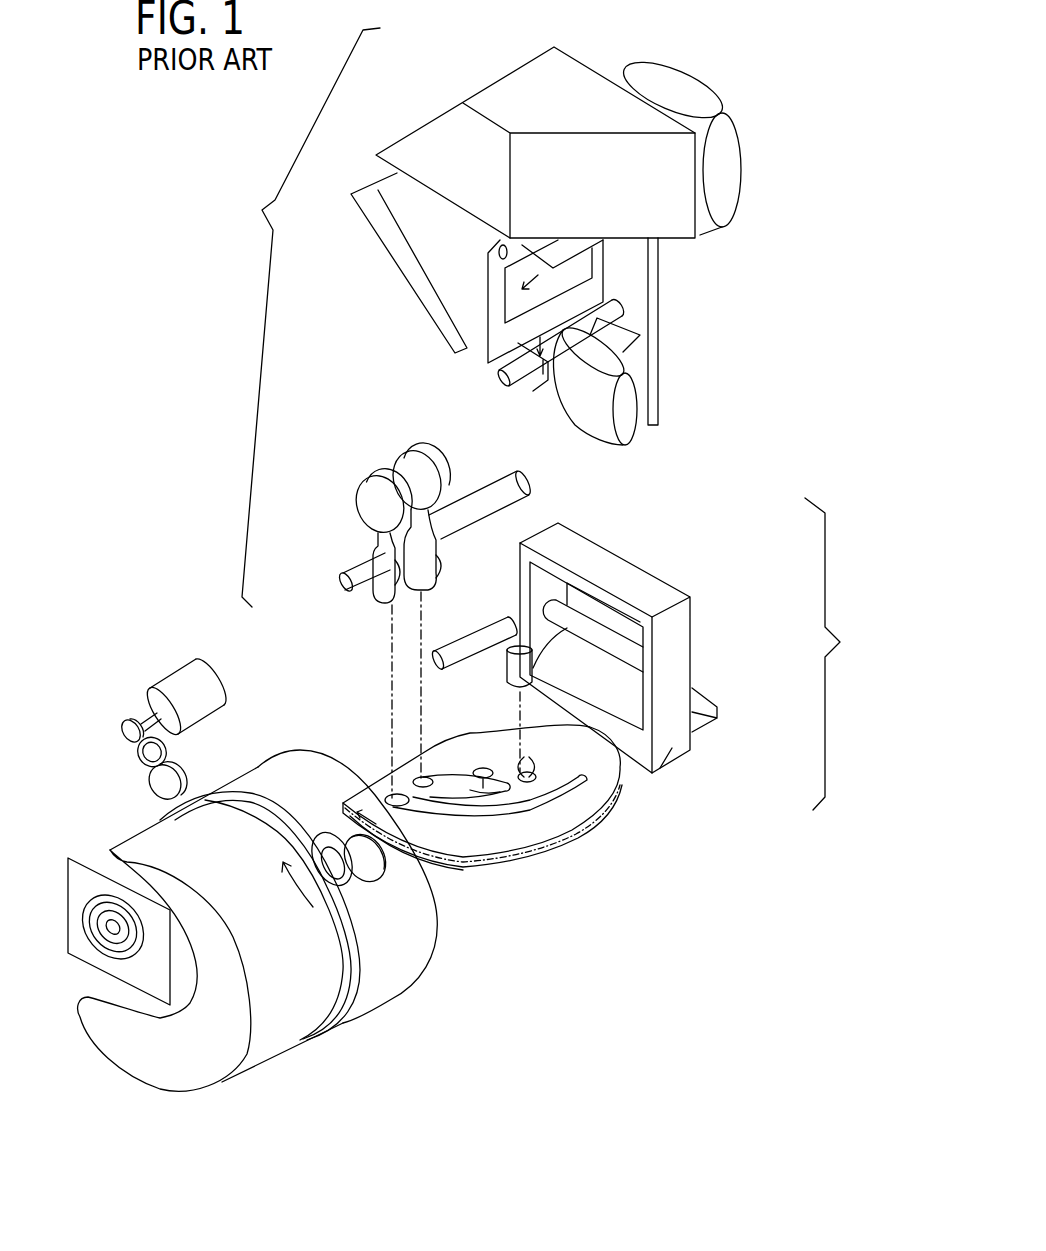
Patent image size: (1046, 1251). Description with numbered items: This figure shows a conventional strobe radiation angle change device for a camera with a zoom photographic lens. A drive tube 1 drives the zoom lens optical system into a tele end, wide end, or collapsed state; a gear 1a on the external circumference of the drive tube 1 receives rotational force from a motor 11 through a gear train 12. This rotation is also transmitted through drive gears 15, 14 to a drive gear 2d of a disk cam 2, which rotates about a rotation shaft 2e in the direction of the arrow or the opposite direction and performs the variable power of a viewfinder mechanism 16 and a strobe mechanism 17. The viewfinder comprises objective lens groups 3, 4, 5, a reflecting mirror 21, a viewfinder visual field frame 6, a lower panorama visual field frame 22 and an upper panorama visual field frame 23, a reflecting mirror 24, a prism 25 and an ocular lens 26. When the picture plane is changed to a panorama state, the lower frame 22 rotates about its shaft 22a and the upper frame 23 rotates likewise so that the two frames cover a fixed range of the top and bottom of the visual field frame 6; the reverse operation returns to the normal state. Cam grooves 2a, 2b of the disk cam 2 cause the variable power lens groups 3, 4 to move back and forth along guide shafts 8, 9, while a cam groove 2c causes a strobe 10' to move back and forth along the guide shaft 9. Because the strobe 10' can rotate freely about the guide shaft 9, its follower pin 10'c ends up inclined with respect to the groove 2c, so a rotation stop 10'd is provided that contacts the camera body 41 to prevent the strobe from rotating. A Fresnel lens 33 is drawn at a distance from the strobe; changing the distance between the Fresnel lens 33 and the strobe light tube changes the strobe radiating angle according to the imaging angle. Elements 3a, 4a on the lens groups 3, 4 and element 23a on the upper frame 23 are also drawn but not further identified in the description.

The drive tube 1 is at (390, 970).
The gear 1a is at (337, 1032).
The disk cam 2 is at (587, 805).
The cam groove 2a is at (517, 822).
The cam groove 2b is at (455, 787).
The cam groove 2c is at (610, 767).
The drive gear 2d is at (578, 840).
The rotation shaft 2e is at (485, 787).
The objective lens group 3 is at (370, 502).
The lens holder pin 3a is at (383, 597).
The objective lens group 4 is at (408, 468).
The lens holder pin 4a is at (430, 575).
The objective lens group 5 is at (625, 428).
The viewfinder visual field frame 6 is at (490, 348).
The guide shaft 8 is at (497, 492).
The guide shaft 9 is at (458, 648).
The strobe 10' is at (645, 648).
The follower pin 10'c is at (481, 682).
The rotation stop 10'd is at (736, 770).
The motor 11 is at (210, 688).
The gear train 12 is at (153, 800).
The drive gear 14 is at (394, 967).
The drive gear 15 is at (308, 825).
The viewfinder mechanism 16 is at (296, 317).
The strobe mechanism 17 is at (852, 654).
The reflecting mirror 21 is at (660, 362).
The lower panorama visual field frame 22 is at (550, 392).
The shaft 22a is at (623, 307).
The upper panorama visual field frame 23 is at (556, 235).
The pin 23a is at (497, 257).
The reflecting mirror 24 is at (413, 280).
The prism 25 is at (430, 130).
The ocular lens 26 is at (667, 85).
The Fresnel lens 33 is at (78, 857).
The camera body 41 is at (718, 709).